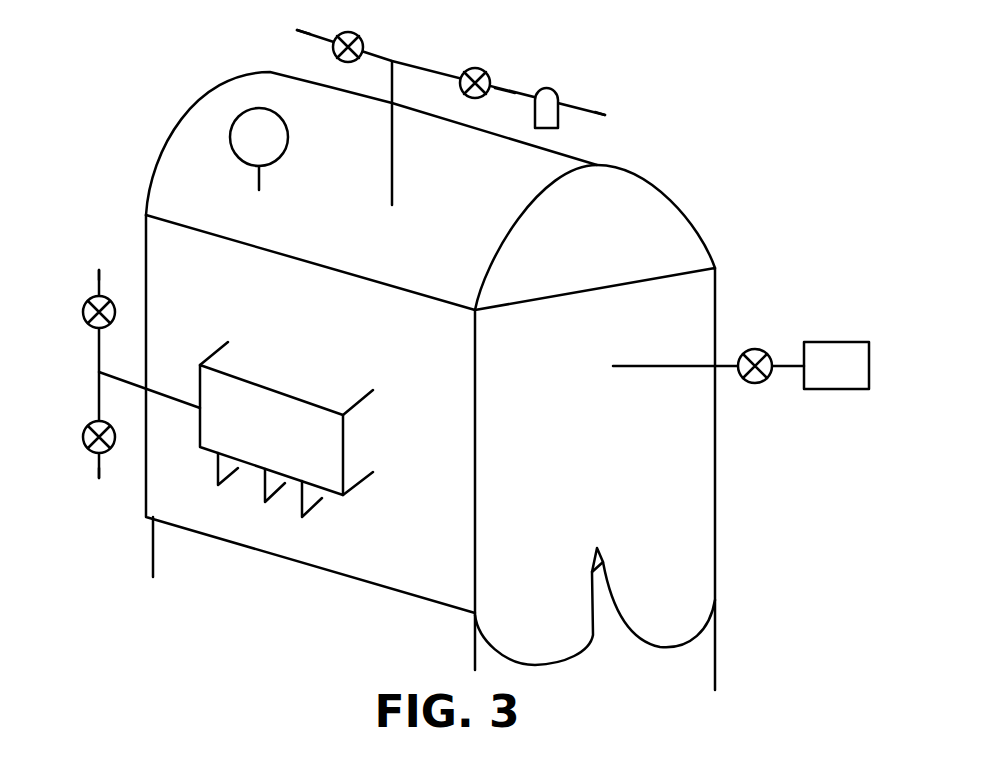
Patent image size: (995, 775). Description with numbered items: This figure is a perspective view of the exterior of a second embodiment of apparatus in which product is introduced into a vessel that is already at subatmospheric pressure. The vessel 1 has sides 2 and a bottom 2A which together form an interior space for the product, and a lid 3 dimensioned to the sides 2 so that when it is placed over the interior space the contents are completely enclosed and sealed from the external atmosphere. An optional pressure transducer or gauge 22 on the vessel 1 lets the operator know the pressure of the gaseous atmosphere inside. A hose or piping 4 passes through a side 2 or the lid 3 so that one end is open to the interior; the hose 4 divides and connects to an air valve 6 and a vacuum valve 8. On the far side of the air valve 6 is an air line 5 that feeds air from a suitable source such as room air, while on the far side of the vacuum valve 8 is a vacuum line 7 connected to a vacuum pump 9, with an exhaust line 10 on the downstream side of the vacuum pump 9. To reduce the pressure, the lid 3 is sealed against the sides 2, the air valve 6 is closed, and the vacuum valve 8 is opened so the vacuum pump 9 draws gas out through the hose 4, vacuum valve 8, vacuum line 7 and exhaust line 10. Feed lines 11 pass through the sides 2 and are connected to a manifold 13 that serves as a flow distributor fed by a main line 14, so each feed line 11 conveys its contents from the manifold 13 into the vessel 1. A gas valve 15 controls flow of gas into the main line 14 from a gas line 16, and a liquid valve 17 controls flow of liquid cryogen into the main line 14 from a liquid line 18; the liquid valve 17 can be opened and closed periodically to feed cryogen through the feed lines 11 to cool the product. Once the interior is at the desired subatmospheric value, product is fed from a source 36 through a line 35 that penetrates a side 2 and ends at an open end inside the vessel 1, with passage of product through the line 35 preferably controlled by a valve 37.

The vessel 1 is at (688, 210).
The sides 2 is at (430, 452).
The bottom 2A is at (595, 610).
The lid 3 is at (371, 167).
The hose or piping 4 is at (380, 50).
The air line 5 is at (291, 30).
The air valve 6 is at (350, 27).
The vacuum line 7 is at (505, 88).
The vacuum valve 8 is at (477, 69).
The vacuum pump 9 is at (555, 87).
The exhaust line 10 is at (620, 117).
The feed lines 11 is at (232, 478).
The manifold 13 is at (286, 418).
The main line 14 is at (149, 374).
The gas valve 15 is at (82, 312).
The gas line 16 is at (99, 259).
The liquid valve 17 is at (82, 439).
The liquid line 18 is at (99, 488).
The pressure transducer or gauge 22 is at (259, 149).
The line 35 is at (640, 358).
The source 36 is at (836, 365).
The valve 37 is at (755, 338).